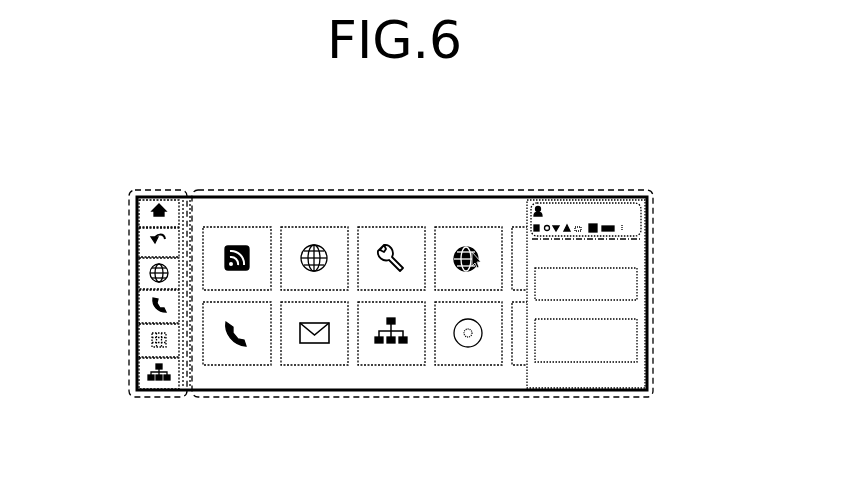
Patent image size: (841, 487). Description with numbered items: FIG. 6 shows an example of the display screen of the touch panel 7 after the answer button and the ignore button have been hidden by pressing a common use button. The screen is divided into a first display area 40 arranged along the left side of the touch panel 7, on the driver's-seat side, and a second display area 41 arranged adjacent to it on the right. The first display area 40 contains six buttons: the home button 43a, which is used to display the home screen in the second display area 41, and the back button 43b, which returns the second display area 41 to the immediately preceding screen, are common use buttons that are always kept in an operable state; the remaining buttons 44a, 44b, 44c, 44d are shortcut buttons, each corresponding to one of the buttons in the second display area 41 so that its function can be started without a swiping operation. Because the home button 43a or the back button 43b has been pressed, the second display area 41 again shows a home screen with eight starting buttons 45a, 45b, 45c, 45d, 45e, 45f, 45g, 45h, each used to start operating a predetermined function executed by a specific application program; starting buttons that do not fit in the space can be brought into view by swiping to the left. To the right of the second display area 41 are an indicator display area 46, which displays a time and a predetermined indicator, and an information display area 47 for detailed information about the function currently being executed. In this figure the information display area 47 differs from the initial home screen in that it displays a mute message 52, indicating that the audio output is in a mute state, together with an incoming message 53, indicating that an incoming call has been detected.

The touch panel 7 is at (501, 179).
The first display area 40 is at (151, 190).
The second display area 41 is at (301, 190).
The home button 43a is at (140, 206).
The back button 43b is at (140, 238).
The shortcut button 44a is at (140, 266).
The shortcut button 44b is at (140, 298).
The shortcut button 44c is at (140, 331).
The shortcut button 44d is at (140, 370).
The starting button 45a is at (243, 227).
The starting button 45b is at (334, 227).
The starting button 45c is at (399, 227).
The starting button 45d is at (456, 227).
The starting button 45e is at (234, 365).
The starting button 45f is at (314, 365).
The starting button 45g is at (391, 365).
The starting button 45h is at (468, 365).
The indicator display area 46 is at (598, 192).
The information display area 47 is at (634, 248).
The mute message 52 is at (637, 286).
The incoming message 53 is at (633, 334).